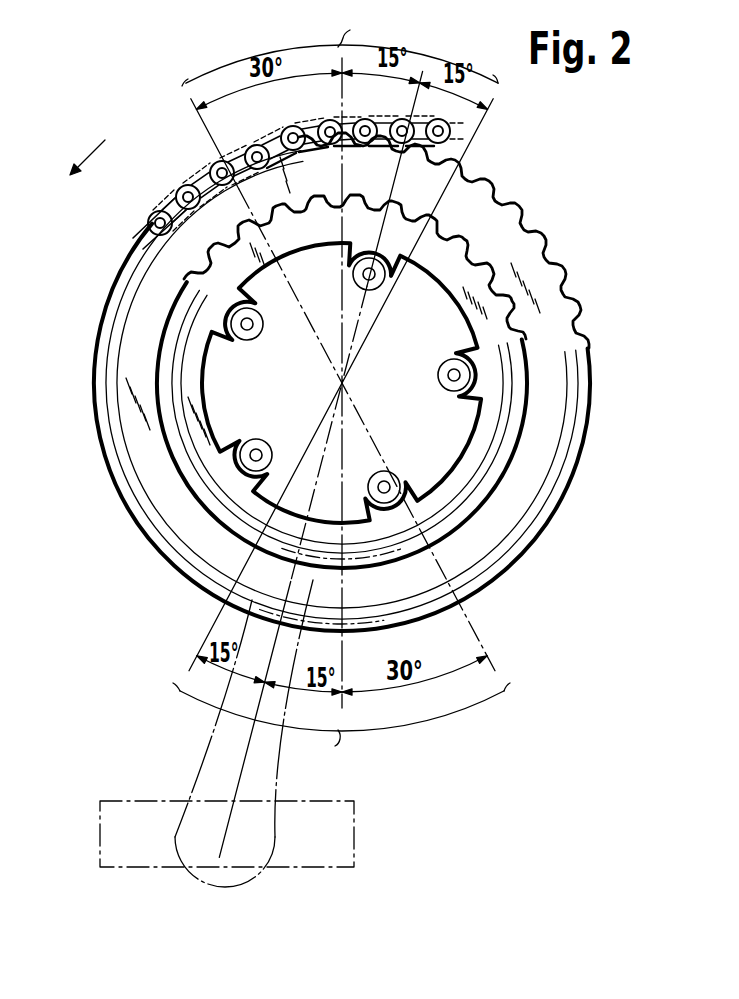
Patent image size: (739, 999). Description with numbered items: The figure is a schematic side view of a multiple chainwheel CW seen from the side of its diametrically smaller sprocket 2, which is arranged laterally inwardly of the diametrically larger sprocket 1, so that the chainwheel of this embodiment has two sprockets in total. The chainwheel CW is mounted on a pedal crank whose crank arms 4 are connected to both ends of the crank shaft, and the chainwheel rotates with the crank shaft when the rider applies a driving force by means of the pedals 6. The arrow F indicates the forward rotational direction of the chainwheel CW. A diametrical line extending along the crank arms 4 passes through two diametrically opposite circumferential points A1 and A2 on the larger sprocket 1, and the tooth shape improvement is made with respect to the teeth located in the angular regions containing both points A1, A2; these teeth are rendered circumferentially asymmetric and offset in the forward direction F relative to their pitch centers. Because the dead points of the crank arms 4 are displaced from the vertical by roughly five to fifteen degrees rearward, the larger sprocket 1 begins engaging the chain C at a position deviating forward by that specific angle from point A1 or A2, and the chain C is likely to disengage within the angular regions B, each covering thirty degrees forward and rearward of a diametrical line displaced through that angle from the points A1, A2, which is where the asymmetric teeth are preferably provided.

The diametrically larger sprocket 1 is at (108, 468).
The diametrically smaller sprocket 2 is at (163, 480).
The crank arms 4 is at (197, 781).
The pedals 6 is at (354, 822).
The chain C is at (299, 175).
The angular regions B is at (335, 392).
The forward rotational direction F is at (76, 157).
The multiple chainwheel CW is at (152, 548).
The circumferential point A1 is at (287, 627).
The circumferential point A2 is at (378, 206).